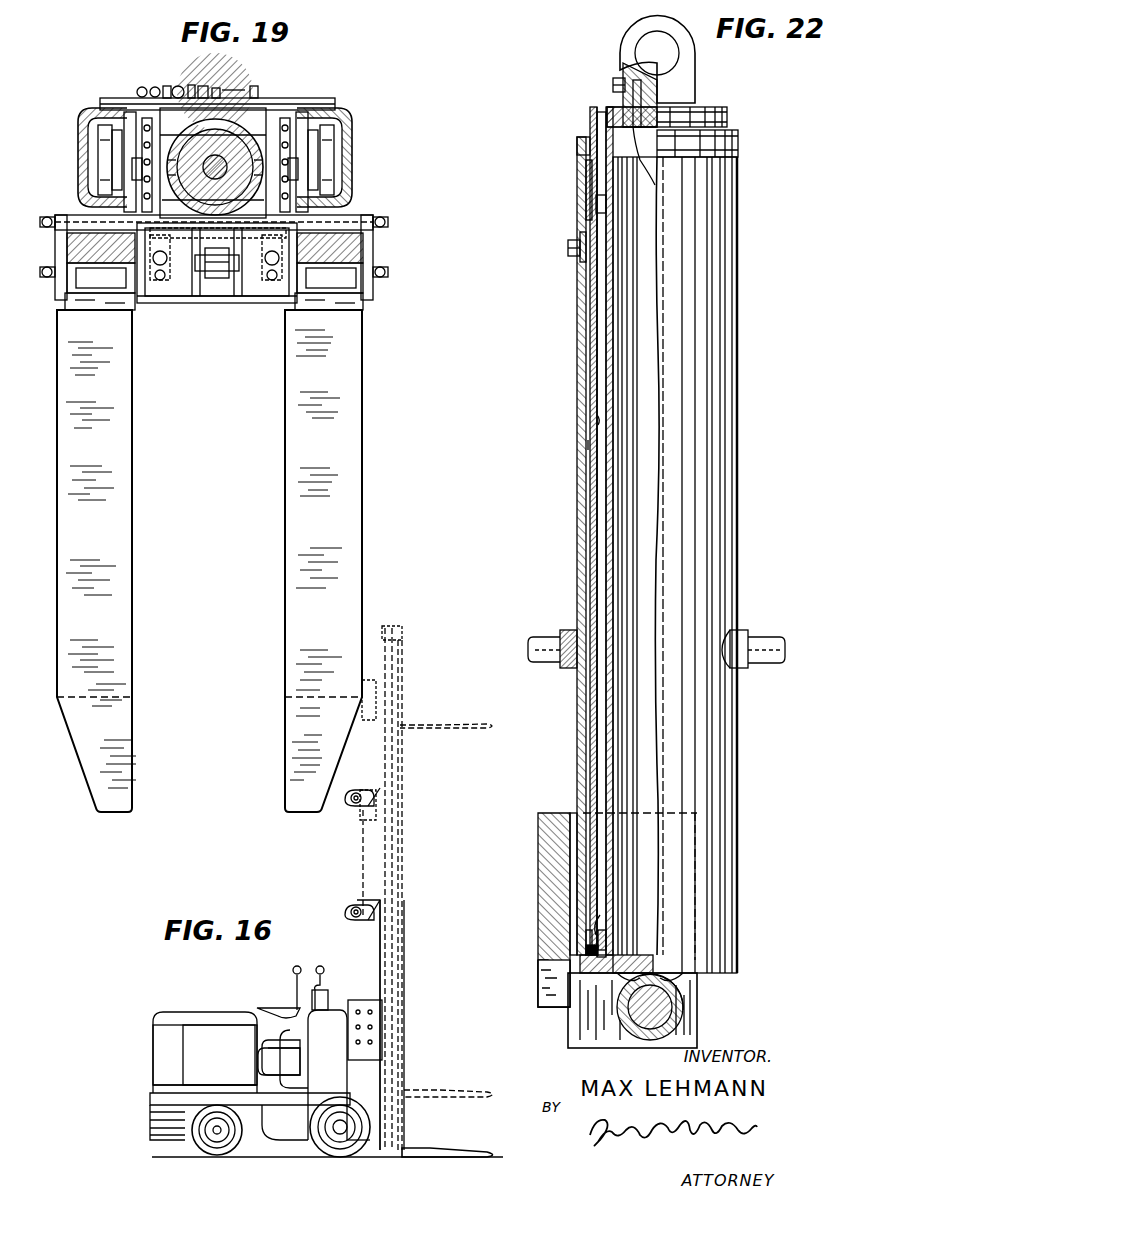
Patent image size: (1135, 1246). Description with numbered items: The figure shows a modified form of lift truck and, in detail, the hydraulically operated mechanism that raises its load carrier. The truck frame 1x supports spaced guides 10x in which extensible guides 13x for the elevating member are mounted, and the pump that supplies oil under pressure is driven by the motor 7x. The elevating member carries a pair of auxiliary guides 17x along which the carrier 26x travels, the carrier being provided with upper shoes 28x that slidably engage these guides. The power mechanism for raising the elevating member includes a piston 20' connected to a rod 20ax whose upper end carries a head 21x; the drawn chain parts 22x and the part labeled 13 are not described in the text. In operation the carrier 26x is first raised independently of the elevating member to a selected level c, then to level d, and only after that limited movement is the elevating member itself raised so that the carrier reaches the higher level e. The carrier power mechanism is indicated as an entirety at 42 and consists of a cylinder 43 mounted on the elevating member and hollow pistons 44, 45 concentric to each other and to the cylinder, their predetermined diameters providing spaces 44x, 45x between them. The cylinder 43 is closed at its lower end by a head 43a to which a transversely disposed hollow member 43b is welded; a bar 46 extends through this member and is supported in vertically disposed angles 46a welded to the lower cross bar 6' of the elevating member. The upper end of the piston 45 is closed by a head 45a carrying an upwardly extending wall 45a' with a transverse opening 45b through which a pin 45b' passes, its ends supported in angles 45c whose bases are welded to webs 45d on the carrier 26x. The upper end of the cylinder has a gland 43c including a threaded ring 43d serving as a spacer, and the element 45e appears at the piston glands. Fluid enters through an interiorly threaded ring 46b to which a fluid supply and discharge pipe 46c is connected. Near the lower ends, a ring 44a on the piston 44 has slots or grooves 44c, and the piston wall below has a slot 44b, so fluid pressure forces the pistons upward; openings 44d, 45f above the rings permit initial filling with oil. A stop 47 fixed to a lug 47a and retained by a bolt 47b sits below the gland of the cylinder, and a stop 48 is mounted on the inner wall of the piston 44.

In FIG. 19, the top plate 13 is at (335, 104).
In FIG. 19, the spaced guides 10x is at (238, 157).
In FIG. 16, the spaced guides 10x is at (355, 924).
In FIG. 19, the left chain 22x is at (136, 120).
In FIG. 19, the head 21x is at (290, 122).
In FIG. 19, the piston 20' is at (215, 134).
In FIG. 19, the rod 20ax is at (220, 160).
In FIG. 19, the auxiliary guides 17x is at (67, 222).
In FIG. 19, the upper shoes 28x is at (295, 290).
In FIG. 19, the pin 45b' is at (169, 288).
In FIG. 19, the upwardly extending wall 45a' is at (217, 294).
In FIG. 22, the upwardly extending wall 45a' is at (699, 53).
In FIG. 19, the angles 45c is at (245, 278).
In FIG. 19, the webs 45d is at (283, 290).
In FIG. 22, the webs 45d is at (655, 185).
In FIG. 19, the load carrier 26x is at (374, 494).
In FIG. 16, the load carrier 26x is at (447, 1123).
In FIG. 16, the truck frame 1x is at (302, 1090).
In FIG. 16, the motor 7x is at (262, 1063).
In FIG. 16, the extensible guides 13x is at (363, 880).
In FIG. 16, the selected level c C is at (446, 1090).
In FIG. 16, the higher level e is at (458, 724).
In FIG. 16, the level d is at (364, 847).
In FIG. 22, the power mechanism 42 is at (748, 452).
In FIG. 22, the transverse opening 45b is at (639, 57).
In FIG. 22, the head 45a is at (687, 95).
In FIG. 22, the hollow piston 45 is at (620, 350).
In FIG. 22, the hollow piston 44 is at (593, 362).
In FIG. 22, the cylinder 43 is at (578, 382).
In FIG. 22, the space 45x is at (597, 420).
In FIG. 22, the space 44x is at (588, 448).
In FIG. 22, the rod collar 45e is at (590, 132).
In FIG. 22, the ring 43d is at (580, 140).
In FIG. 22, the gland 43c is at (578, 195).
In FIG. 22, the lug 47a is at (590, 225).
In FIG. 22, the stop 47 is at (576, 238).
In FIG. 22, the bolt 47b is at (582, 258).
In FIG. 22, the stop 48 is at (590, 280).
In FIG. 22, the interiorly threaded ring 46b is at (568, 630).
In FIG. 22, the fluid supply and discharge pipe 46c is at (540, 662).
In FIG. 22, the lower cross bar 6' is at (552, 892).
In FIG. 22, the head 43a is at (640, 953).
In FIG. 22, the ring 44a is at (575, 890).
In FIG. 22, the slots or grooves 44c is at (586, 930).
In FIG. 22, the slots 44b is at (586, 950).
In FIG. 22, the openings 44d is at (665, 855).
In FIG. 22, the openings 45f is at (606, 940).
In FIG. 22, the angles 46a is at (568, 1035).
In FIG. 22, the hollow member 43b is at (683, 995).
In FIG. 22, the bar 46 is at (672, 1005).